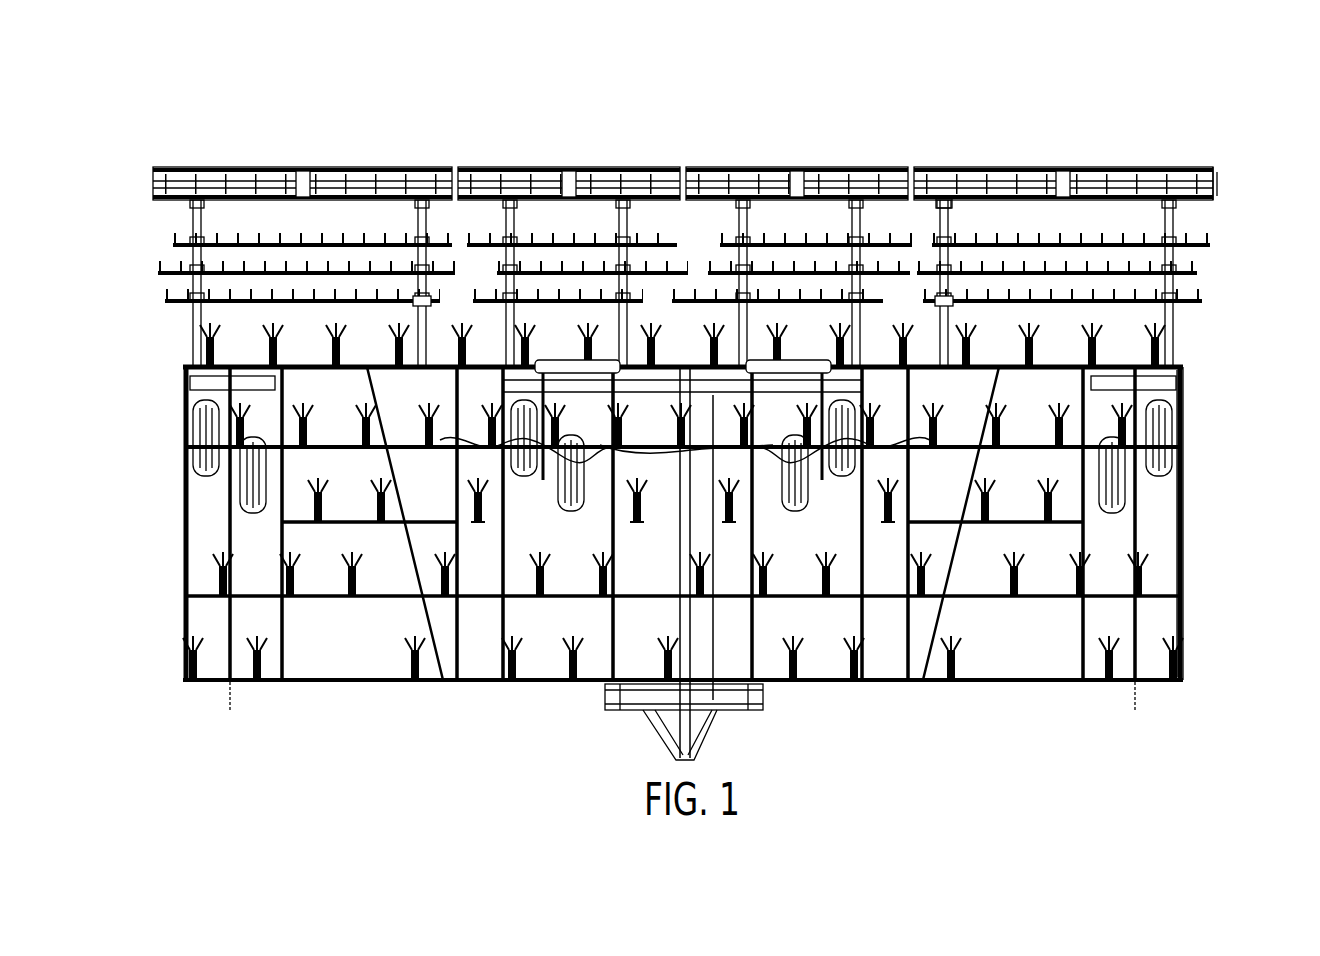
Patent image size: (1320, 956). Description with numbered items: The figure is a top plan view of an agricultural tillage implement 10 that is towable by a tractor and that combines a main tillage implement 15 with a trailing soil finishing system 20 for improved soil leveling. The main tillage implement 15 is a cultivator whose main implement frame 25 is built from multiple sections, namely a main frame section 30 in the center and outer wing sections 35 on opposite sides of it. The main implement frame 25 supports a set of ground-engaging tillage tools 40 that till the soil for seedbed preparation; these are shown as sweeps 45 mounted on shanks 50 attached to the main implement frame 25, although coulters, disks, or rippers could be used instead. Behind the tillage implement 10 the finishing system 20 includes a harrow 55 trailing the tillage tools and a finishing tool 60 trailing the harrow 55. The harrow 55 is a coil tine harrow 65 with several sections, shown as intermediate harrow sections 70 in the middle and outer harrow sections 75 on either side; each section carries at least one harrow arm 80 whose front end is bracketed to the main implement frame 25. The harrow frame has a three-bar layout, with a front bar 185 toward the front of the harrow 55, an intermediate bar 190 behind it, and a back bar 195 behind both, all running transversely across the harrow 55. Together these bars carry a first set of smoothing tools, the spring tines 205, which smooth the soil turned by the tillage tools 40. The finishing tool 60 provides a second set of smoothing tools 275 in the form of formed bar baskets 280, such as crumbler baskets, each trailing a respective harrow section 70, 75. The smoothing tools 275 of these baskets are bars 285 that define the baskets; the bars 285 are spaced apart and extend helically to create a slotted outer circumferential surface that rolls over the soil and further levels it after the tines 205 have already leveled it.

The agricultural tillage implement 10 is at (190, 118).
The main tillage implement 15 is at (888, 710).
The soil finishing system 20 is at (712, 140).
The main implement frame 25 is at (800, 705).
The main frame section 30 is at (586, 700).
The outer wing sections 35 is at (380, 697).
The ground-engaging tillage tools 40 is at (1196, 680).
The sweeps 45 is at (1188, 634).
The shanks 50 is at (1082, 548).
The harrow 55 is at (1214, 272).
The finishing tool 60 is at (1224, 182).
The coil tine harrow 65 is at (172, 315).
The intermediate harrow sections 70 is at (722, 298).
The outer harrow sections 75 is at (395, 307).
The harrow arm 80 is at (178, 355).
The front bar 185 is at (180, 300).
The intermediate bar 190 is at (172, 268).
The back bar 195 is at (183, 240).
The tines 205 is at (1115, 297).
The second set of smoothing tools 275 is at (985, 150).
The formed bar baskets 280 is at (1042, 160).
The bars 285 is at (823, 166).